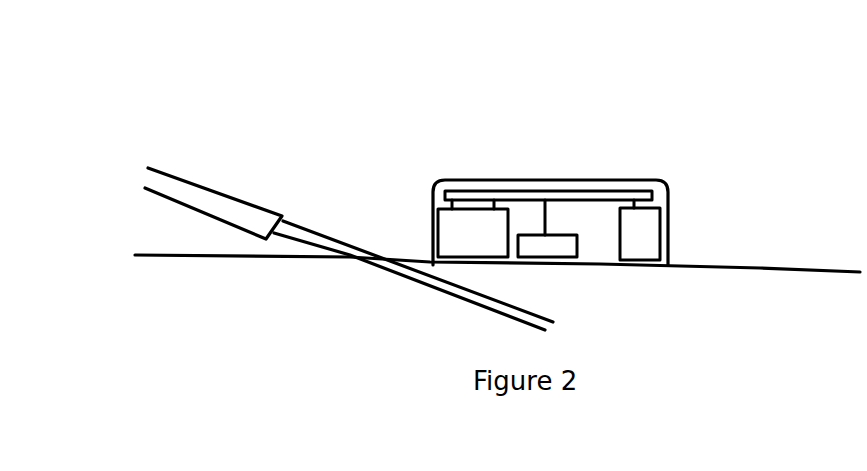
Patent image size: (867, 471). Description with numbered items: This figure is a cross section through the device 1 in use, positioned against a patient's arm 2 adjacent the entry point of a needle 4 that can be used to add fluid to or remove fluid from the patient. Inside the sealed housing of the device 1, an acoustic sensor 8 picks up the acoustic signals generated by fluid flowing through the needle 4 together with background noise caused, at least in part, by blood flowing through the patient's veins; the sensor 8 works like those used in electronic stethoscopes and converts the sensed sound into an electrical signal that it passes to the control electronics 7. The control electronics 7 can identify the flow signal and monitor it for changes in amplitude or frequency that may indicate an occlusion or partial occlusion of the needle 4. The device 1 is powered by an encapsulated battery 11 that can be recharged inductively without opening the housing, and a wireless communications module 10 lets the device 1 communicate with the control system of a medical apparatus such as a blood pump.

The device 1 is at (715, 124).
The patient's arm 2 is at (771, 264).
The needle 4 is at (315, 235).
The control electronics 7 is at (522, 189).
The acoustic sensor 8 is at (557, 233).
The wireless communications module 10 is at (647, 234).
The battery 11 is at (467, 241).